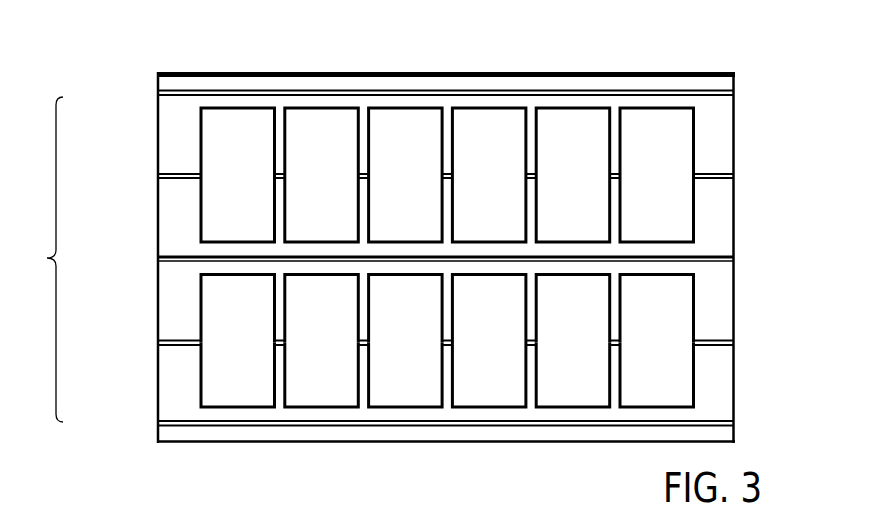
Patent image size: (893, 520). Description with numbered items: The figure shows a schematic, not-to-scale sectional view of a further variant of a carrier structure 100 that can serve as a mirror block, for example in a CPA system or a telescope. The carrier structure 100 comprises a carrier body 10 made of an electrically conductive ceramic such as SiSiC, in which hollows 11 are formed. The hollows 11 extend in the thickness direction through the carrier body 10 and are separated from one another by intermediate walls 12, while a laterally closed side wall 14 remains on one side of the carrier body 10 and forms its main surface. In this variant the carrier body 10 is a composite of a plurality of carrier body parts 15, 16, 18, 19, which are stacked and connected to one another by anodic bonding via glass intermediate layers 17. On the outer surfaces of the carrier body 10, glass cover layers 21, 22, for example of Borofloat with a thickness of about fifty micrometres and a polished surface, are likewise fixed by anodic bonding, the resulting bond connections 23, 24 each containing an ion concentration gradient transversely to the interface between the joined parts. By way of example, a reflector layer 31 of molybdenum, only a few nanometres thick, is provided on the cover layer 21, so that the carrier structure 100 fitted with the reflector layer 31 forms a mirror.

The carrier structure 100 is at (645, 57).
The carrier body 10 is at (35, 259).
The hollows 11 is at (529, 388).
The intermediate walls 12 is at (384, 378).
The side wall 14 is at (386, 146).
The carrier body part 15 is at (175, 128).
The carrier body part 16 is at (165, 218).
The glass intermediate layers 17 is at (160, 176).
The carrier body part 18 is at (165, 303).
The carrier body part 19 is at (174, 388).
The cover layer 21 is at (307, 82).
The cover layer 22 is at (282, 433).
The bond connection 23 is at (160, 92).
The bond connection 24 is at (160, 422).
The reflector layer 31 is at (418, 73).